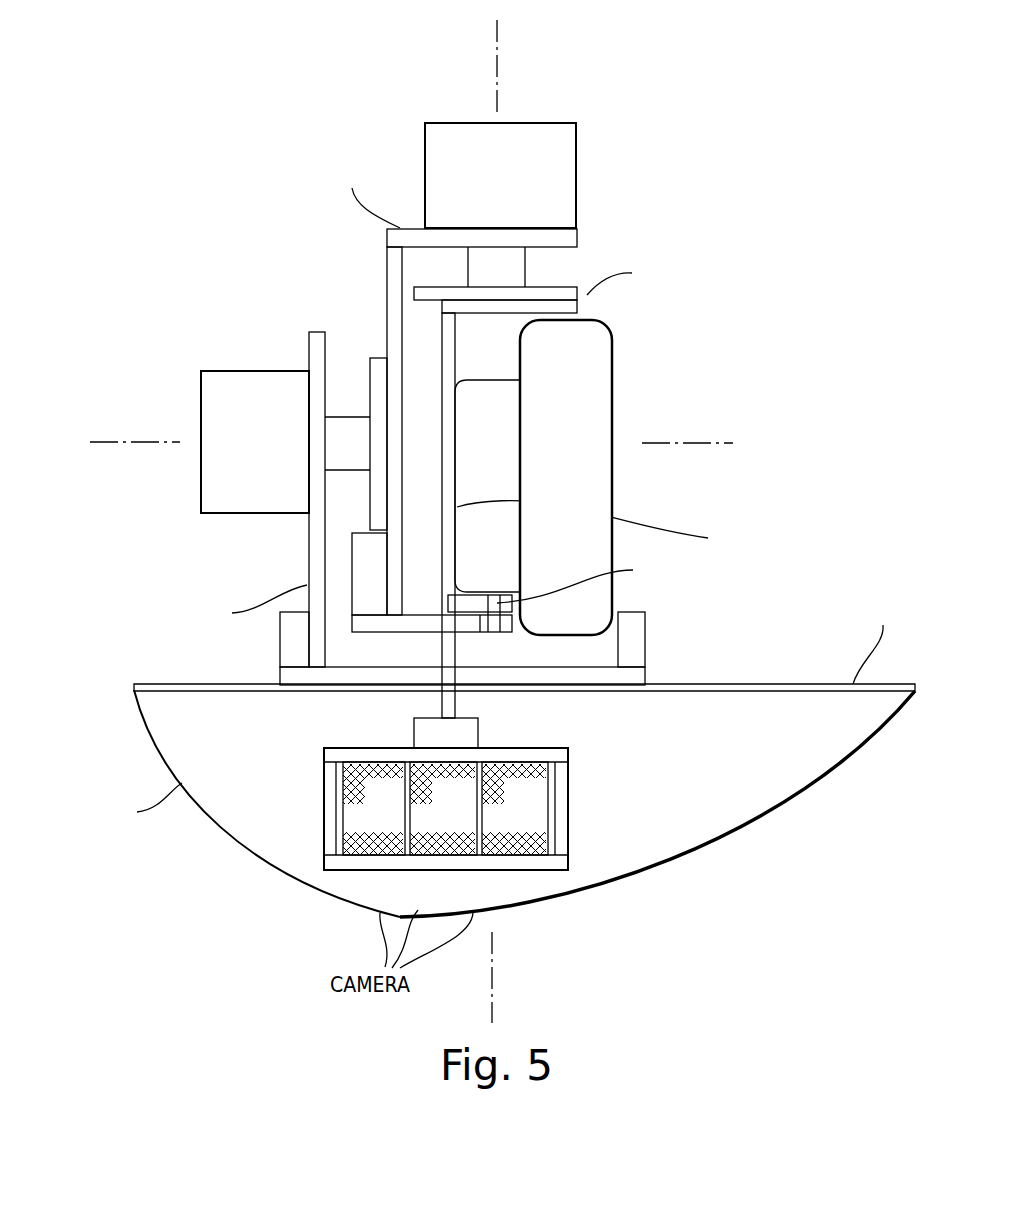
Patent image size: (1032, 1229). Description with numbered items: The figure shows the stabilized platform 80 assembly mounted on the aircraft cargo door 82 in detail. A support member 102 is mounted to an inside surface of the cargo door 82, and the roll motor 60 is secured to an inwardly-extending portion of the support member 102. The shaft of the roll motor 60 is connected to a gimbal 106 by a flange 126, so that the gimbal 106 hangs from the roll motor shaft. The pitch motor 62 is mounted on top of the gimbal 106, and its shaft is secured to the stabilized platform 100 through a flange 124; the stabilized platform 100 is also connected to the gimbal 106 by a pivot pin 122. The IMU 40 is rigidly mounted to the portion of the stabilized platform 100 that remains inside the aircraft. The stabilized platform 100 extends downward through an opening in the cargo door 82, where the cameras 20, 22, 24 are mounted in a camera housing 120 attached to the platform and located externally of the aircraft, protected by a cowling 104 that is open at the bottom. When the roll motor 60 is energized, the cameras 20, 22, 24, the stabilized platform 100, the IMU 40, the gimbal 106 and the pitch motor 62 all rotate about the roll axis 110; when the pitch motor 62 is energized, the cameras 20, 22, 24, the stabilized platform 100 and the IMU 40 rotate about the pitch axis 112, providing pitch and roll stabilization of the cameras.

The pitch axis 112 is at (497, 87).
The pitch motor 62 is at (578, 167).
The gimbal 106 is at (387, 275).
The flange 124 is at (572, 286).
The flange 126 is at (372, 370).
The stabilized platform 100 is at (442, 357).
The stabilized platform 80 is at (668, 517).
The IMU 40 is at (615, 367).
The pivot pin 122 is at (500, 633).
The support member 102 is at (307, 540).
The roll motor 60 is at (215, 371).
The roll axis 110 is at (665, 442).
The cargo door 82 is at (788, 685).
The cowling 104 is at (215, 825).
The camera housing 120 is at (563, 757).
The camera 20 is at (372, 854).
The camera 22 is at (447, 854).
The camera 24 is at (510, 854).